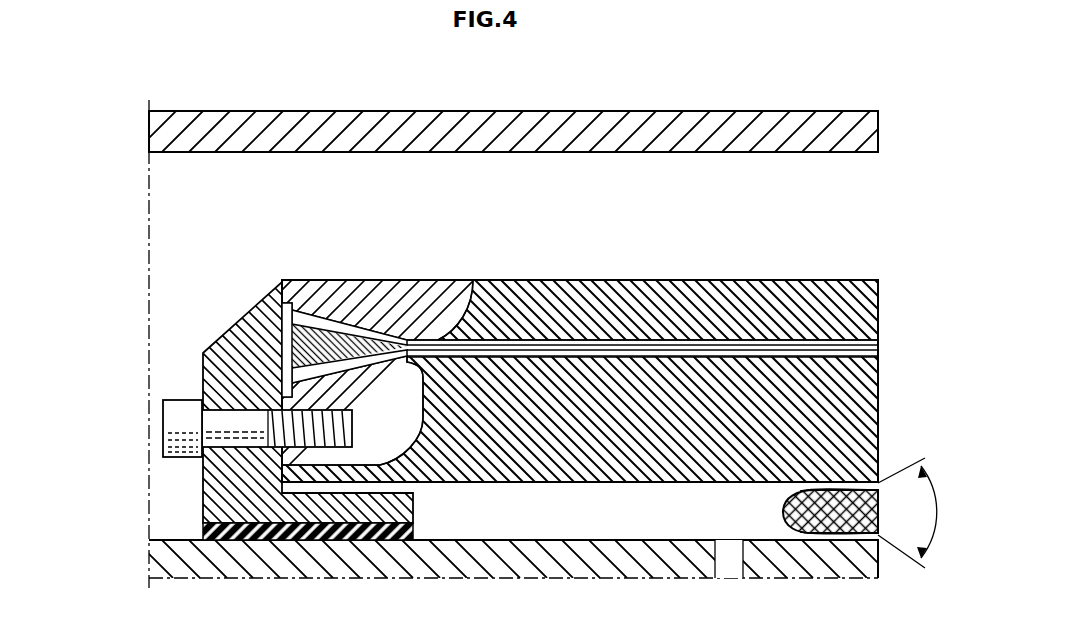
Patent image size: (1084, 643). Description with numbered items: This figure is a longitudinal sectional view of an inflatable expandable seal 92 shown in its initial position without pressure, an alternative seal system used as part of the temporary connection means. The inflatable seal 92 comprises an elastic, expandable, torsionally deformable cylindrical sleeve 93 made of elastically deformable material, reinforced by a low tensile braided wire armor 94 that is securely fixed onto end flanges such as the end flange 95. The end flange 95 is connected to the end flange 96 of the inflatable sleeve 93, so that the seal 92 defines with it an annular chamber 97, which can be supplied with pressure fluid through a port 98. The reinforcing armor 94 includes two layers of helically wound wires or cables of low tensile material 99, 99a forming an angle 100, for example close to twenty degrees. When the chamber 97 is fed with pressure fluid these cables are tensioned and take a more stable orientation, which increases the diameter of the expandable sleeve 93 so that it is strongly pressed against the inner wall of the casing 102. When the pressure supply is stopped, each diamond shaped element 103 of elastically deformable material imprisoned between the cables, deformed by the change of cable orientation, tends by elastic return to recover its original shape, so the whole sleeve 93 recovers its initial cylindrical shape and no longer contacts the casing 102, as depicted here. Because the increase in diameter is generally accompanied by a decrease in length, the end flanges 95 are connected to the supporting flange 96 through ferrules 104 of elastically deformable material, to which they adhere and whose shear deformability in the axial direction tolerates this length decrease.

The inflatable seal 92 is at (730, 281).
The cylindrical sleeve 93 is at (607, 295).
The braided wire armor 94 is at (565, 347).
The end flange 95 is at (347, 298).
The end flange 96 is at (182, 570).
The annular chamber 97 is at (578, 512).
The port 98 is at (723, 565).
The helical wound cable 99 is at (800, 519).
The helical wound cable 99a is at (808, 492).
The angle 100 is at (919, 513).
The casing 102 is at (207, 125).
The diamond shaped element 103 is at (823, 533).
The ferrule 104 is at (203, 531).